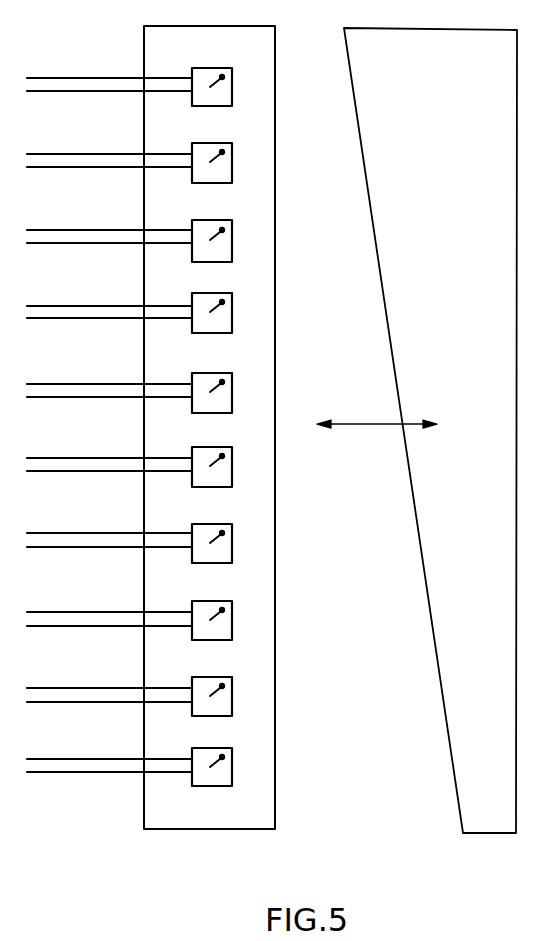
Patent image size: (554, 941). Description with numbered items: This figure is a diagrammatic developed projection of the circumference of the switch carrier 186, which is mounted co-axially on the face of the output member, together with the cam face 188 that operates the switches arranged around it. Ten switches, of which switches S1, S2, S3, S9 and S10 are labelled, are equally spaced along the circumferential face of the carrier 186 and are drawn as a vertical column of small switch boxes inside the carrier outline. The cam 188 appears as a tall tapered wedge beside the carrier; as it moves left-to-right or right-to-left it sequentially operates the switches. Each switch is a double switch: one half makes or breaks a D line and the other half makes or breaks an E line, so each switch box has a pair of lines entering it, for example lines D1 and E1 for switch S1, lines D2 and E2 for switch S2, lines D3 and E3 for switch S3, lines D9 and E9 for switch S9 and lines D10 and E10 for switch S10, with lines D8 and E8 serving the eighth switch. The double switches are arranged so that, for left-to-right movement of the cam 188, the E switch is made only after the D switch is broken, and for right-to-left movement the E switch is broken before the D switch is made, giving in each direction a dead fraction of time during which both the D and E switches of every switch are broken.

The switch carrier 186 is at (175, 805).
The cam face 188 is at (384, 309).
The line D1 is at (87, 78).
The line D2 is at (101, 154).
The line D3 is at (101, 230).
The line D8 is at (100, 612).
The line D9 is at (103, 688).
The line D10 is at (107, 759).
The line E1 is at (45, 92).
The line E2 is at (45, 168).
The line E3 is at (45, 244).
The line E8 is at (45, 627).
The line E9 is at (53, 703).
The line E10 is at (55, 773).
The switch S1 is at (232, 90).
The switch S2 is at (232, 165).
The switch S3 is at (232, 238).
The switch S9 is at (232, 696).
The switch S10 is at (232, 767).